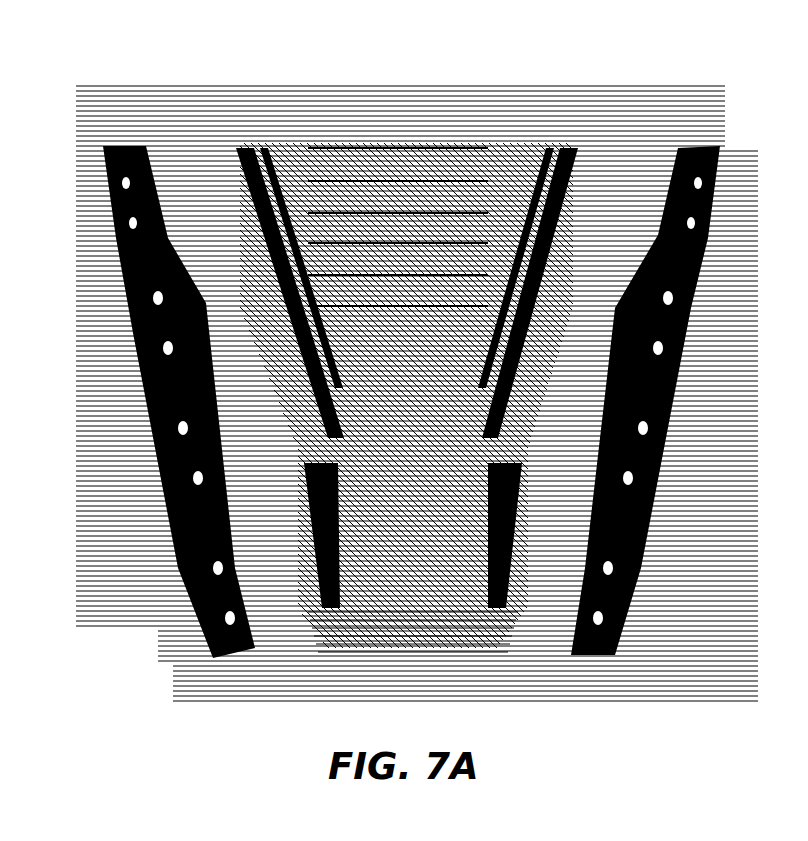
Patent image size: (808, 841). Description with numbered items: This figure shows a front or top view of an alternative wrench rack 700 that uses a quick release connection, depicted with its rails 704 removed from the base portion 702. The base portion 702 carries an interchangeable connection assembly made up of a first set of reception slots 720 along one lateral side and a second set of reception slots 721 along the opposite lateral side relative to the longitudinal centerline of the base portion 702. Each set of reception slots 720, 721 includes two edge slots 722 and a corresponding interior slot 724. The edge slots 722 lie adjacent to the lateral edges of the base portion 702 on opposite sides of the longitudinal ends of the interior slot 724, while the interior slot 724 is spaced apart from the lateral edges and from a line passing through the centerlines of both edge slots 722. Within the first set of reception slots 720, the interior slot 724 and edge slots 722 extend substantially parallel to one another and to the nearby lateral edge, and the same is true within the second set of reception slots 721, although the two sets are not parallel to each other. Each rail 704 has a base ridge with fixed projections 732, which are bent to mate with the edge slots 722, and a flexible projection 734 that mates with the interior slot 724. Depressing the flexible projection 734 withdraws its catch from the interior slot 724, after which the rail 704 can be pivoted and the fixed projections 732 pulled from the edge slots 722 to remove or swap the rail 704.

The wrench rack 700 is at (432, 395).
The base portion 702 is at (397, 148).
The rails 704 is at (115, 138).
The first set of reception slots 720 is at (315, 590).
The second set of reception slots 721 is at (496, 608).
The edge slots 722 is at (240, 212).
The interior slot 724 is at (312, 399).
The fixed projections 732 is at (125, 325).
The flexible projection 734 is at (210, 400).